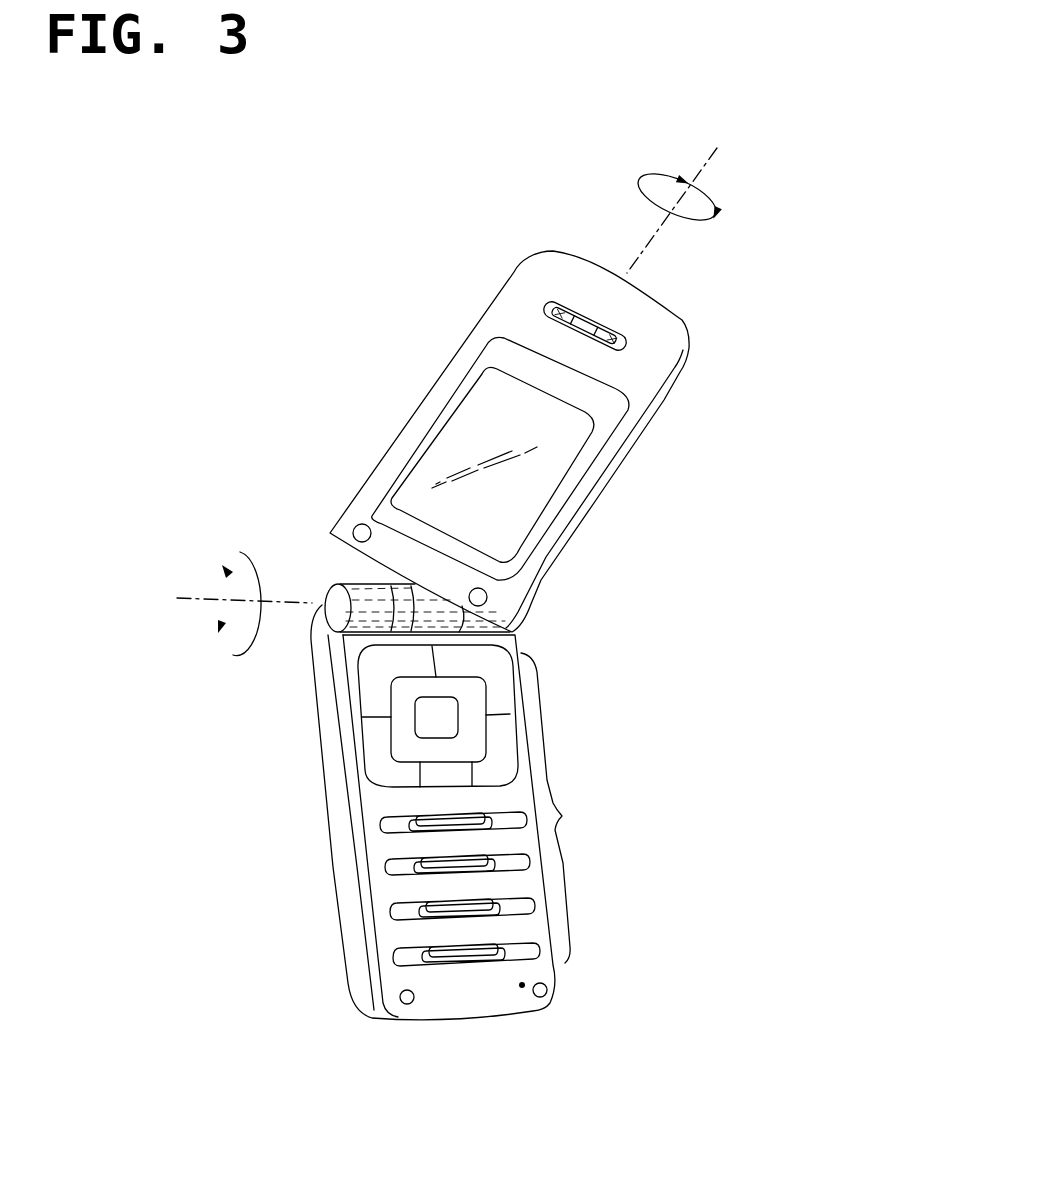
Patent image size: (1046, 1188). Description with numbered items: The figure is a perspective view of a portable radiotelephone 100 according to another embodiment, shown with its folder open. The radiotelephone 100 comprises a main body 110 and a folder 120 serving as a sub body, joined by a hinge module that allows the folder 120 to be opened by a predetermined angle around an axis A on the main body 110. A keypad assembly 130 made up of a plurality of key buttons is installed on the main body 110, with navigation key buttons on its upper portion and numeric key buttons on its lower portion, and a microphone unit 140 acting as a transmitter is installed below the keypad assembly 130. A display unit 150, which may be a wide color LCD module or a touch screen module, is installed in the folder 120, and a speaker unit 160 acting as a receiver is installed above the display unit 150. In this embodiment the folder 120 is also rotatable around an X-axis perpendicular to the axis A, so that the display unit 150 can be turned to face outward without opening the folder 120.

The portable radiotelephone 100 is at (448, 592).
The main body 110 is at (567, 963).
The folder 120 is at (400, 428).
The keypad assembly 130 is at (498, 885).
The microphone unit 140 is at (522, 986).
The display unit 150 is at (483, 413).
The speaker unit 160 is at (549, 302).